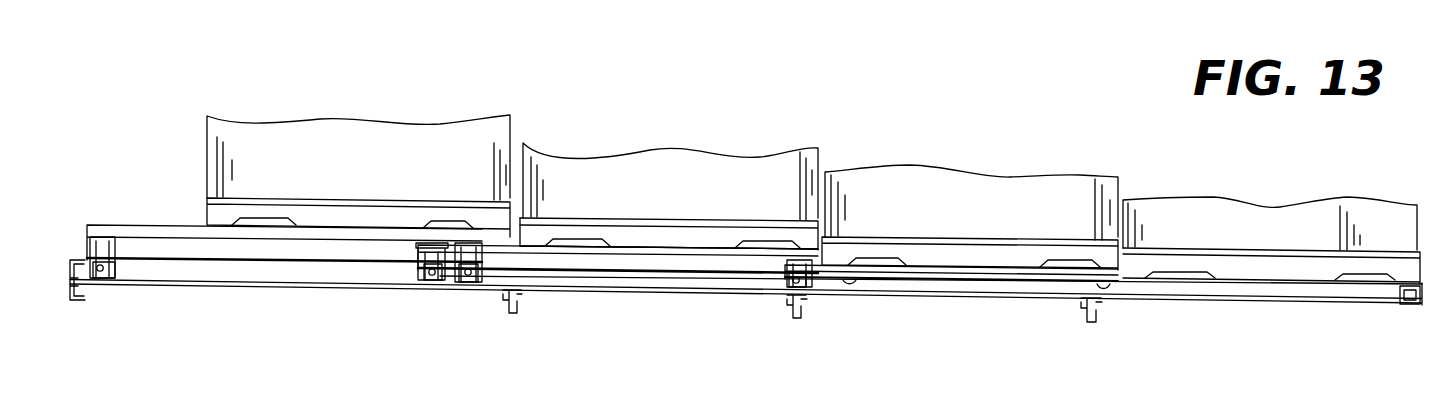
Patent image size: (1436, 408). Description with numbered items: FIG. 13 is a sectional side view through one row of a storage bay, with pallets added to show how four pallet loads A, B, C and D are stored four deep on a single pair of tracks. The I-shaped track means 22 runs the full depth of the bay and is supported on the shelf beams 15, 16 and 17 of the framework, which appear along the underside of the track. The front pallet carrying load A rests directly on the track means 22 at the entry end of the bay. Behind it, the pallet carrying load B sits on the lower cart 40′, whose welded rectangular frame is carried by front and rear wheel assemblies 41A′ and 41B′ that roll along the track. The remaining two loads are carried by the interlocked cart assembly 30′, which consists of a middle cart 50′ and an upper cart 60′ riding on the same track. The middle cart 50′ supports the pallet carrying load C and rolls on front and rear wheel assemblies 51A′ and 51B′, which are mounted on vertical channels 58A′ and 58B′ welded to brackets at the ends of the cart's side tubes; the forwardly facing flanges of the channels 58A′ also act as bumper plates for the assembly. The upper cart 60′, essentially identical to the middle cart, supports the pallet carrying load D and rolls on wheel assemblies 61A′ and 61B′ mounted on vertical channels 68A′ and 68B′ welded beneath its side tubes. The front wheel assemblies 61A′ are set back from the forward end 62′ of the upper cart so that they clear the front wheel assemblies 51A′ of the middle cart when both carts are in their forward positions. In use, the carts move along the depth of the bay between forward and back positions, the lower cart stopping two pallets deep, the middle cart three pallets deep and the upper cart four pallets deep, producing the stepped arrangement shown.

The shelf beam 15 is at (1412, 308).
The shelf beam 16 is at (513, 313).
The shelf beam 17 is at (85, 300).
The track means 22 is at (663, 280).
The interlocked cart assembly 30′ is at (550, 277).
The lower cart 40′ is at (947, 263).
The front wheel assembly 41A′ is at (1103, 287).
The rear wheel assembly 41B′ is at (850, 282).
The middle cart 50′ is at (638, 247).
The front wheel assembly 51A′ is at (807, 297).
The rear wheel assembly 51B′ is at (432, 287).
The vertical channel 58A′ is at (778, 283).
The vertical channel 58B′ is at (418, 260).
The upper cart 60′ is at (163, 232).
The front wheel assembly 61A′ is at (472, 283).
The rear wheel assembly 61B′ is at (110, 280).
The forward end 62′ is at (520, 247).
The vertical channel 68A′ is at (470, 262).
The vertical channel 68B′ is at (100, 243).
The pallet load A is at (1255, 203).
The pallet load B is at (955, 170).
The pallet load C is at (702, 148).
The pallet load D is at (443, 125).